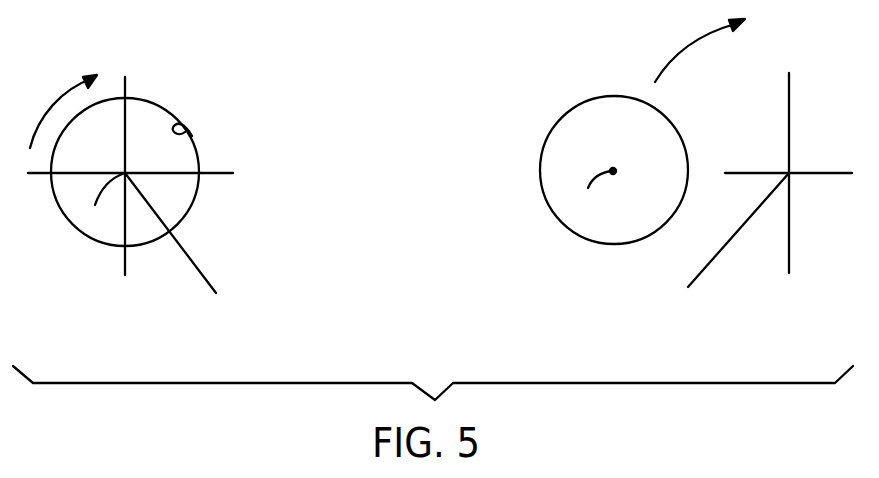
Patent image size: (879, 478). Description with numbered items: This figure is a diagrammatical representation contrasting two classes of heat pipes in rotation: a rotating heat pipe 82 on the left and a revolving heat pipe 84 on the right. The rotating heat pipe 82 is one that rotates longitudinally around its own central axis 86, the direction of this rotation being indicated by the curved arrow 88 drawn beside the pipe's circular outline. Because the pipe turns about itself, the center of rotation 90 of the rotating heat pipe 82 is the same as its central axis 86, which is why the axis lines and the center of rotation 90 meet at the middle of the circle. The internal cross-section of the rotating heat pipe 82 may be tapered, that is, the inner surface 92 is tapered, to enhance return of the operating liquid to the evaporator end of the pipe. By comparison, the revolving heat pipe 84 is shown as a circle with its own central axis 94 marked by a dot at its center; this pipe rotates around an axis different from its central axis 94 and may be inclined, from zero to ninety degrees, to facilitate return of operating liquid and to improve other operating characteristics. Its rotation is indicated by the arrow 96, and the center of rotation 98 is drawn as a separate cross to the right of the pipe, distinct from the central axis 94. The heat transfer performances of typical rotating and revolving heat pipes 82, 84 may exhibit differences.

The rotating heat pipe 82 is at (153, 100).
The revolving heat pipe 84 is at (568, 140).
The central axis 86 is at (95, 205).
The arrow 88 is at (50, 108).
The center of rotation 90 is at (200, 268).
The inner surface 92 is at (185, 132).
The central axis 94 is at (588, 188).
The arrow 96 is at (690, 47).
The center of rotation 98 is at (707, 267).